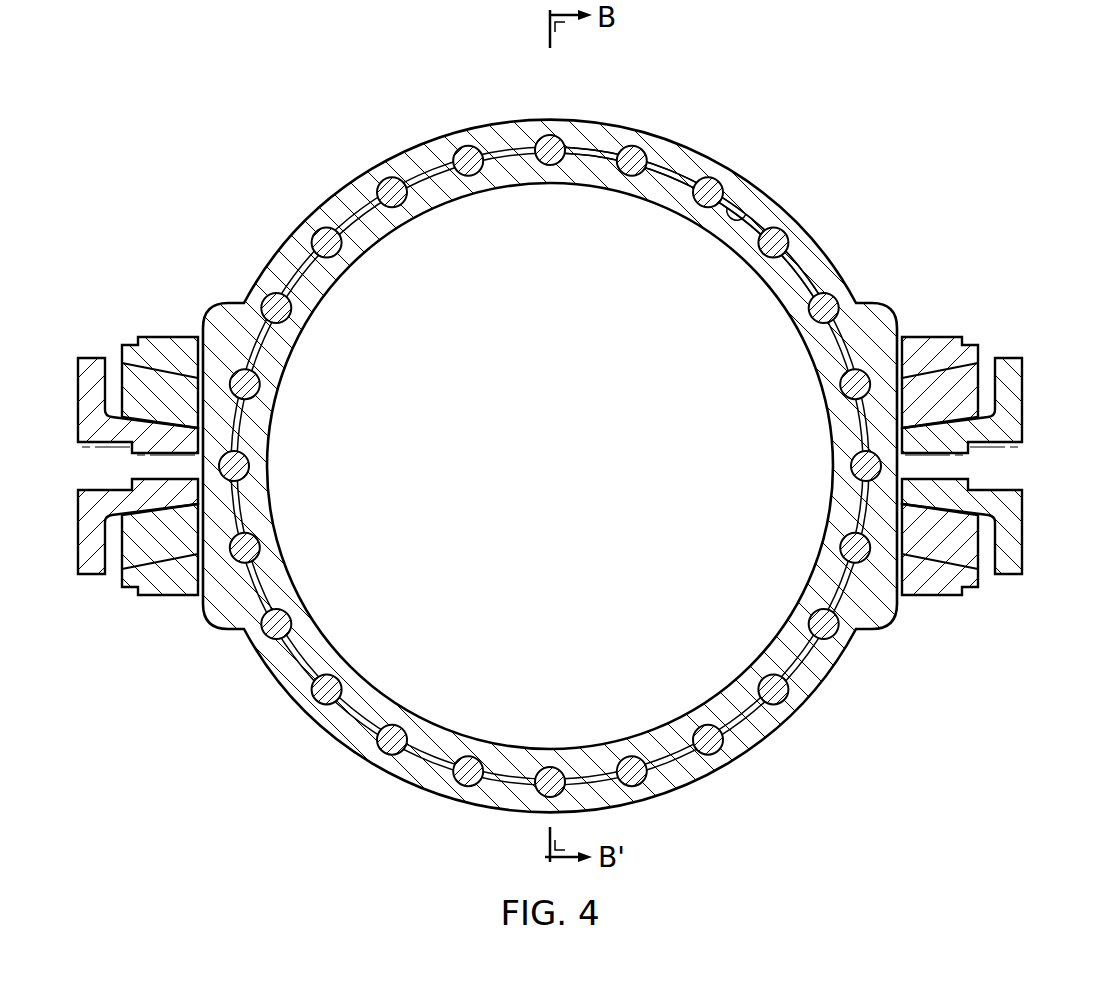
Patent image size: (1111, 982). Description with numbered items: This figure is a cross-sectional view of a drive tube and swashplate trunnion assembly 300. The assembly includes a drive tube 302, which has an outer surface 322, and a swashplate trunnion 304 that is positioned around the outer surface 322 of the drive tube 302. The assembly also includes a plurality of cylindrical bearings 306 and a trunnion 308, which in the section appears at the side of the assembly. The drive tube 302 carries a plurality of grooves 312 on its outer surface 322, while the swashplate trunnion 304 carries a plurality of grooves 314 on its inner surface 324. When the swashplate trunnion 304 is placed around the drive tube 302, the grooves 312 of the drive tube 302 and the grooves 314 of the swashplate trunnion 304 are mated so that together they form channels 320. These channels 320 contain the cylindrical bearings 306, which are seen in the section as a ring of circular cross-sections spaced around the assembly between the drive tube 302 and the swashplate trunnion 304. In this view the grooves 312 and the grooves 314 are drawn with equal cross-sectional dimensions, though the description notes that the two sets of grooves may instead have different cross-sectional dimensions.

The drive tube and swashplate trunnion assembly 300 is at (587, 438).
The drive tube 302 is at (508, 170).
The swashplate trunnion 304 is at (432, 148).
The cylindrical bearings 306 is at (550, 430).
The trunnion 308 is at (1024, 412).
The grooves 312 is at (396, 728).
The grooves 314 is at (313, 700).
The channels 320 is at (634, 140).
The outer surface 322 is at (683, 176).
The inner surface 324 is at (747, 223).